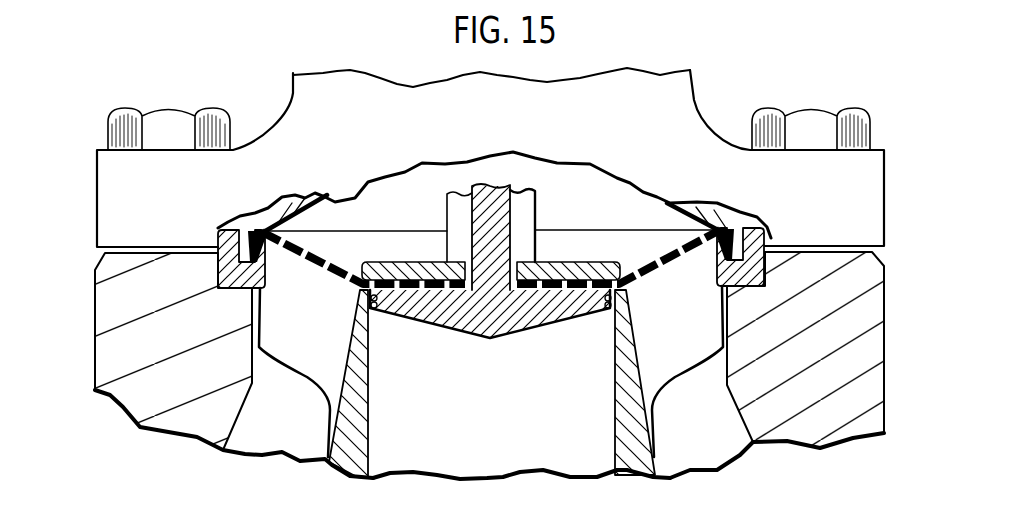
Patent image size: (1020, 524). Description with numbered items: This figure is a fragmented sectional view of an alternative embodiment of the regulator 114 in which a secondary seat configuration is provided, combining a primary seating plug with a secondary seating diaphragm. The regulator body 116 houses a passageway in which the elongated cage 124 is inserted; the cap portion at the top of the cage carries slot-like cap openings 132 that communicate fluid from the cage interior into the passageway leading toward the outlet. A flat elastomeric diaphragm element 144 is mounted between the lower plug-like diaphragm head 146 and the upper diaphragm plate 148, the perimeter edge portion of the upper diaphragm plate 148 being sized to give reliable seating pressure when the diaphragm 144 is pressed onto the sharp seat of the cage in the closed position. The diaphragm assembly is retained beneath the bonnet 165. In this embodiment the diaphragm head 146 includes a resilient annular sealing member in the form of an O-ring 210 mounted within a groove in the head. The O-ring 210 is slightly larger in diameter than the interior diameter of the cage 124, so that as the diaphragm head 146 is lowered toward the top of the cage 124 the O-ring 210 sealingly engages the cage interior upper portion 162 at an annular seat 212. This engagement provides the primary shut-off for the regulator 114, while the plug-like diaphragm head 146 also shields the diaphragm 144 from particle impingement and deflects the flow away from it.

The regulator 114 is at (379, 53).
The regulator body 116 is at (167, 410).
The cage 124 is at (608, 420).
The cap openings 132 is at (308, 362).
The diaphragm element 144 is at (305, 250).
The diaphragm head 146 is at (466, 340).
The upper diaphragm plate 148 is at (573, 261).
The cage interior upper portion 162 is at (606, 327).
The bonnet 165 is at (255, 160).
The O-ring 210 is at (393, 312).
The annular seat 212 is at (374, 310).